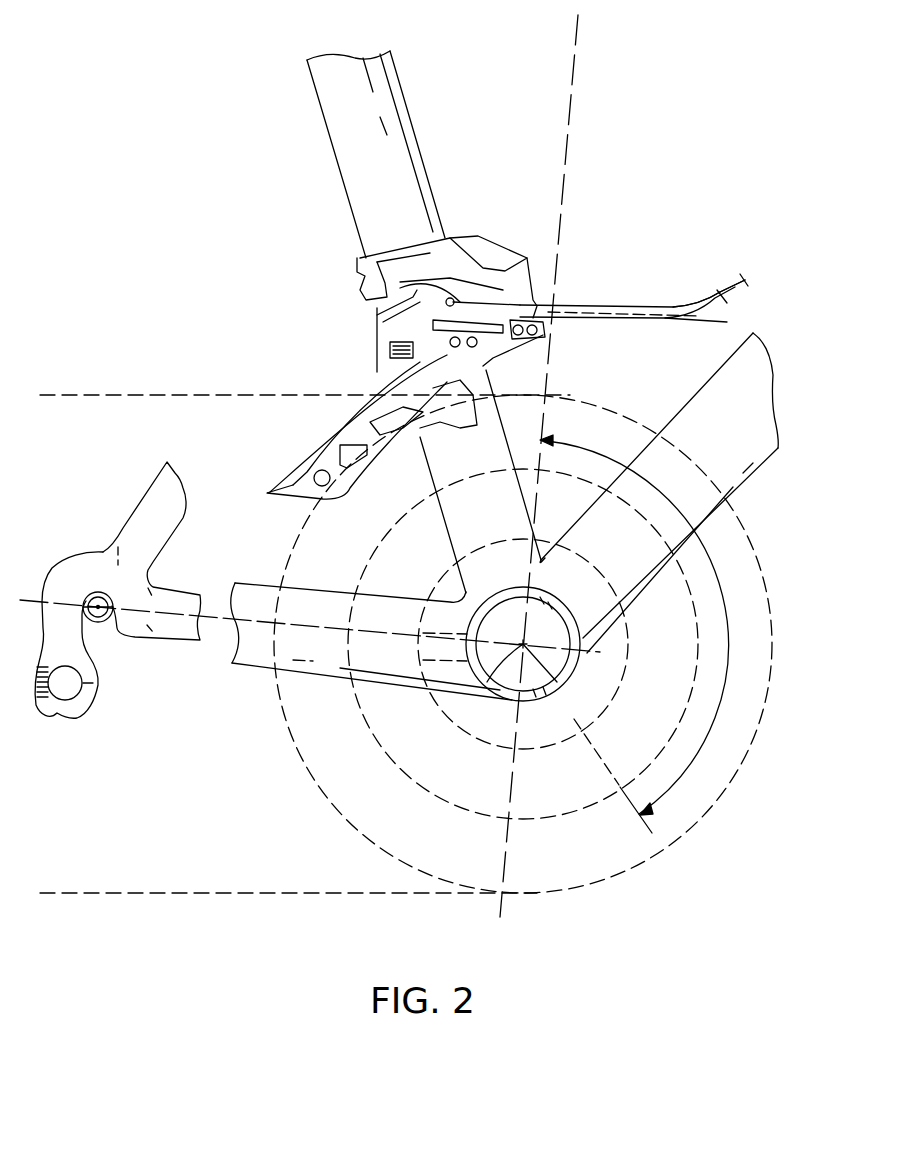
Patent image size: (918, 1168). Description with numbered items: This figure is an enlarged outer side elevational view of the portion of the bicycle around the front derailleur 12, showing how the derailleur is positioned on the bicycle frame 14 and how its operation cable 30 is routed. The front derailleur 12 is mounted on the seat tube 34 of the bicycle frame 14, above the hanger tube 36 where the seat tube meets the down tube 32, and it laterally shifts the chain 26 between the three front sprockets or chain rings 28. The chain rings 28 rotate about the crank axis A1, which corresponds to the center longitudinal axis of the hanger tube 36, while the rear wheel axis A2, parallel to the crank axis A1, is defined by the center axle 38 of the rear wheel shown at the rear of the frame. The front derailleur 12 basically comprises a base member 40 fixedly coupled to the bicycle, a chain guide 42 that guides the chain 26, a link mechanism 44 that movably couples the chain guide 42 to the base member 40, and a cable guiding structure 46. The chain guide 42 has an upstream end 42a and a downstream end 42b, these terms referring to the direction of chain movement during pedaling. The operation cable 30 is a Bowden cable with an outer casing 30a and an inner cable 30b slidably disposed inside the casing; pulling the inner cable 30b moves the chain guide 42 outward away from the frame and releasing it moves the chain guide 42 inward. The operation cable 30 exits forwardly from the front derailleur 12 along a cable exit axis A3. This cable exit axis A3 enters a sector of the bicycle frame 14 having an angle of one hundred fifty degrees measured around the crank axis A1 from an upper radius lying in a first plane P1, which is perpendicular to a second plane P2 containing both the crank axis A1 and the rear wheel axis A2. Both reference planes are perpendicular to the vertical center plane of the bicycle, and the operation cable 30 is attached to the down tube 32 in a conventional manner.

The front derailleur 12 is at (392, 350).
The bicycle frame 14 is at (399, 391).
The chain 26 is at (126, 392).
The chain rings 28 is at (308, 746).
The operation cable 30 is at (659, 297).
The outer casing 30a is at (700, 300).
The inner cable 30b is at (740, 277).
The down tube 32 is at (700, 405).
The seat tube 34 is at (326, 130).
The hanger tube 36 is at (495, 588).
The center axle 38 is at (88, 600).
The base member 40 is at (398, 253).
The chain guide 42 is at (389, 447).
The upstream end 42a is at (276, 492).
The downstream end 42b is at (480, 402).
The link mechanism 44 is at (400, 318).
The cable guiding structure 46 is at (530, 268).
The crank axis A1 is at (520, 685).
The rear wheel axis A2 is at (100, 615).
The cable exit axis A3 is at (600, 310).
The first plane P1 is at (582, 60).
The second plane P2 is at (328, 625).